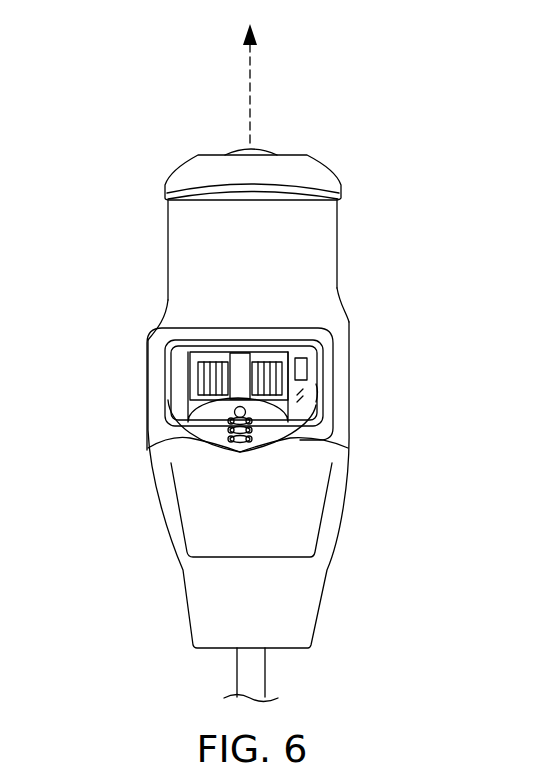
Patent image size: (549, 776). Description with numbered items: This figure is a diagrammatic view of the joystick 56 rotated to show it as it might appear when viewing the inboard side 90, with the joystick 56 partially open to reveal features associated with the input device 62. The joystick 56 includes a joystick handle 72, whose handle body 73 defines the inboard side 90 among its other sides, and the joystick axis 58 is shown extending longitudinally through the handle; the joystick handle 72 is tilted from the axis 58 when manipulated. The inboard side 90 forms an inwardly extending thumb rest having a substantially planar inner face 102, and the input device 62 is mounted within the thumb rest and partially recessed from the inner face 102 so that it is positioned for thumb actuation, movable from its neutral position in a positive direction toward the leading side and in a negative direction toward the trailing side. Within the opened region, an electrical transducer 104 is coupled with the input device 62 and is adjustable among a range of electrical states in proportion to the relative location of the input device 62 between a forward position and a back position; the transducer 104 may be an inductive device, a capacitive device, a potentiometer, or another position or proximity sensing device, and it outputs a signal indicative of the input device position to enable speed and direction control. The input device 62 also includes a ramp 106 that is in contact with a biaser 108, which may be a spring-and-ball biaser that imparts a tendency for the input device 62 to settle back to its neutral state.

The joystick 56 is at (110, 200).
The joystick axis 58 is at (252, 68).
The input device 62 is at (214, 356).
The joystick handle 72 is at (370, 238).
The handle body 73 is at (348, 306).
The inboard side 90 is at (297, 578).
The inner face 102 is at (150, 390).
The electrical transducer 104 is at (298, 358).
The ramp 106 is at (158, 445).
The biaser 108 is at (264, 428).